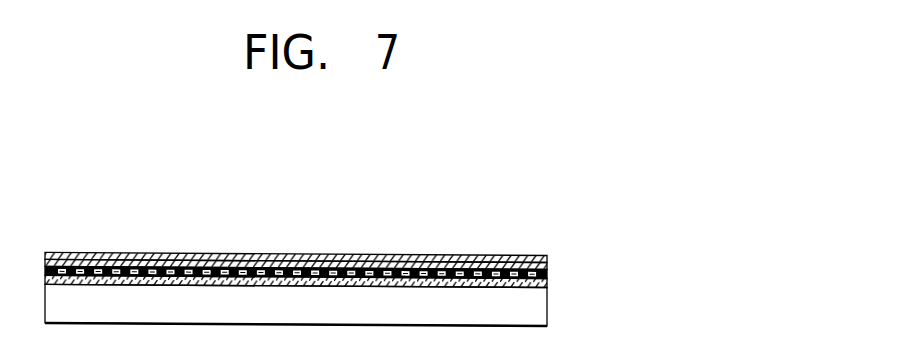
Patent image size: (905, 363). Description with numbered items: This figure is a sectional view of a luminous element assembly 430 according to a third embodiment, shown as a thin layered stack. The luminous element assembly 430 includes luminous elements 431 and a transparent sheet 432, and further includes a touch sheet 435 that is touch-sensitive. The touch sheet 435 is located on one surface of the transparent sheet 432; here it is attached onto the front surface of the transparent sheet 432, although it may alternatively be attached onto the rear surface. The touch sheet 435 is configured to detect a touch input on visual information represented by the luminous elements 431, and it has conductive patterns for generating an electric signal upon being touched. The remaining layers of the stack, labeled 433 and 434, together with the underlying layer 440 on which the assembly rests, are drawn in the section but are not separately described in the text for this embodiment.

The luminous element assembly 430 is at (238, 196).
The luminous elements 431 is at (450, 272).
The transparent sheet 432 is at (404, 283).
The upper protective layer 433 is at (345, 255).
The encapsulation layer 434 is at (244, 268).
The touch sheet 435 is at (295, 265).
The substrate 440 is at (540, 299).